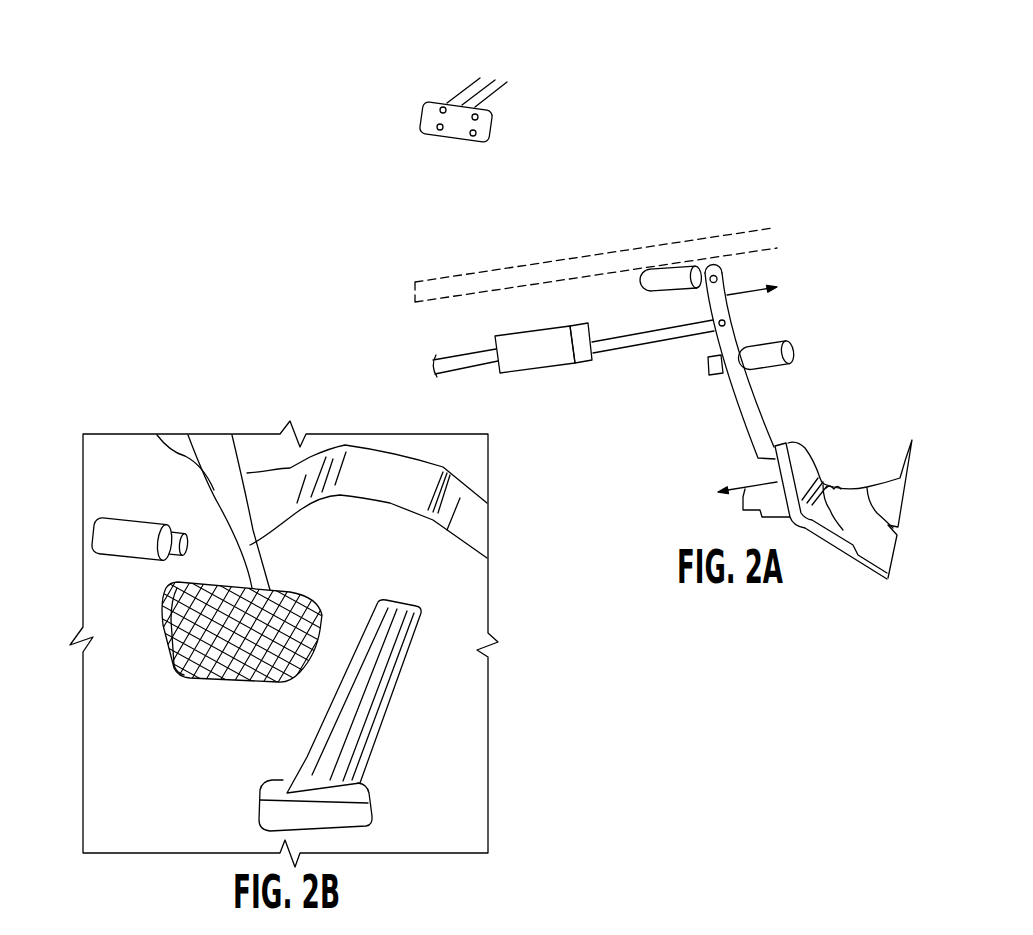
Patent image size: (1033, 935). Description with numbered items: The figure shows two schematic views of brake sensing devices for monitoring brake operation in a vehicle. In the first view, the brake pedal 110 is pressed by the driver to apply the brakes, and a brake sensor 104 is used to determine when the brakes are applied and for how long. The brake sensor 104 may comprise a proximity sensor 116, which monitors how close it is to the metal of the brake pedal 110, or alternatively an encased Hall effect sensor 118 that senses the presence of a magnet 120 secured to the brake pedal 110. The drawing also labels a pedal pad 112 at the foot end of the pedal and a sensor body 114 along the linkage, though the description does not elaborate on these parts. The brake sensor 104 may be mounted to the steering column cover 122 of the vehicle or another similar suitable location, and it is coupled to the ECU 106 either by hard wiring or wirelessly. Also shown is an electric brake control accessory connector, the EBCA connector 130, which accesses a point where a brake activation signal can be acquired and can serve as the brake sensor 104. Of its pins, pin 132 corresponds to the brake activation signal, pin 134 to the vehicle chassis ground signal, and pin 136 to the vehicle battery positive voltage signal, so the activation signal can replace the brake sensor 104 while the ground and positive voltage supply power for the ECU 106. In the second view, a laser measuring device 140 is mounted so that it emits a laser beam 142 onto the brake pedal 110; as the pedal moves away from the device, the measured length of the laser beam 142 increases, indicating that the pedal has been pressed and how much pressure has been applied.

In FIG. 2A, the brake sensor 104 is at (730, 113).
In FIG. 2A, the ECU 106 is at (657, 264).
In FIG. 2B, the ECU 106 is at (90, 531).
In FIG. 2A, the brake pedal 110 is at (743, 497).
In FIG. 2B, the brake pedal 110 is at (207, 502).
In FIG. 2A, the pedal pad 112 is at (828, 483).
In FIG. 2A, the actuator 114 is at (557, 367).
In FIG. 2A, the proximity sensor 116 is at (693, 263).
In FIG. 2A, the Hall effect sensor 118 is at (792, 367).
In FIG. 2A, the magnet 120 is at (678, 428).
In FIG. 2A, the steering column cover 122 is at (470, 275).
In FIG. 2A, the EBCA connector 130 is at (476, 59).
In FIG. 2A, the pin 132 is at (441, 107).
In FIG. 2A, the pin 134 is at (480, 118).
In FIG. 2A, the pin 136 is at (441, 131).
In FIG. 2B, the laser measuring device 140 is at (88, 540).
In FIG. 2B, the laser beam 142 is at (277, 590).